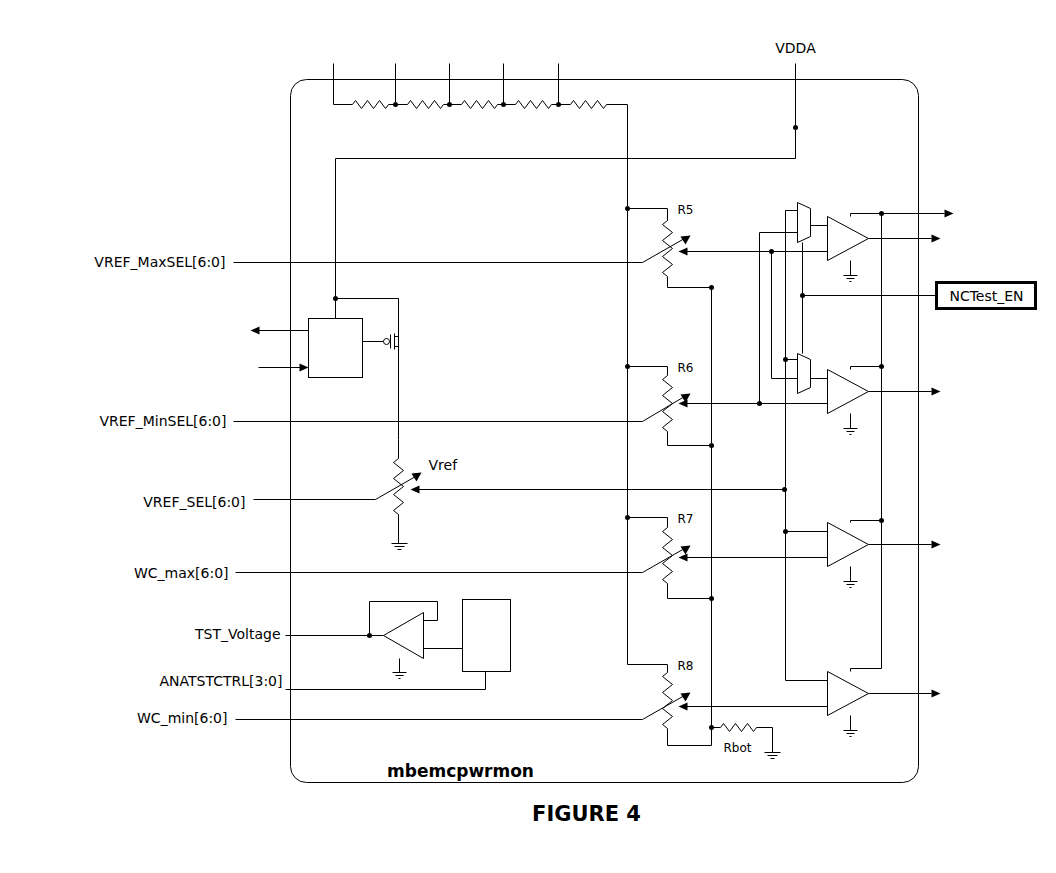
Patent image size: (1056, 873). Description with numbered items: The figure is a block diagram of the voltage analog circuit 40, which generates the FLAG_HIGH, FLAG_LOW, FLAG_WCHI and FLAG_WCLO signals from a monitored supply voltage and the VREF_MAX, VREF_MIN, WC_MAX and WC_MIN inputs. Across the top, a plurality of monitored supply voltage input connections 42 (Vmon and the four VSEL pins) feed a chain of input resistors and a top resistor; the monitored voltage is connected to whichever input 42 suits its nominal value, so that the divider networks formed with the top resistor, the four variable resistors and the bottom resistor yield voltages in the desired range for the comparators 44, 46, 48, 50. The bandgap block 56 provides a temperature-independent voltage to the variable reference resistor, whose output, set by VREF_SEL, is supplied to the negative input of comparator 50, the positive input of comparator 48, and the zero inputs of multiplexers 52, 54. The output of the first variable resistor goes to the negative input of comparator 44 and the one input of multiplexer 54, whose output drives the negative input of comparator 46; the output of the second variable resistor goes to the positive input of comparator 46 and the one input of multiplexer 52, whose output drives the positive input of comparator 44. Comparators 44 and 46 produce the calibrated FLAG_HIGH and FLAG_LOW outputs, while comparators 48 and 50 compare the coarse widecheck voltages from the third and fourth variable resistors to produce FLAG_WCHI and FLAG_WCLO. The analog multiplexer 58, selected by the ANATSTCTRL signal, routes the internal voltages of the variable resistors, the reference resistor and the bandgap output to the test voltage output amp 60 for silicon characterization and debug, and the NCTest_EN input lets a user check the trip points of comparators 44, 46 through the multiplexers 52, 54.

The voltage analog circuit 40 is at (281, 156).
The monitored supply voltage input connections 42 is at (298, 39).
The comparator 44 is at (830, 210).
The comparator 46 is at (874, 406).
The comparator 48 is at (829, 513).
The comparator 50 is at (829, 662).
The multiplexer 52 is at (776, 217).
The multiplexer 54 is at (786, 396).
The bandgap block 56 is at (297, 320).
The analog multiplexer (AMUX) 58 is at (519, 678).
The test voltage output amp 60 is at (354, 618).